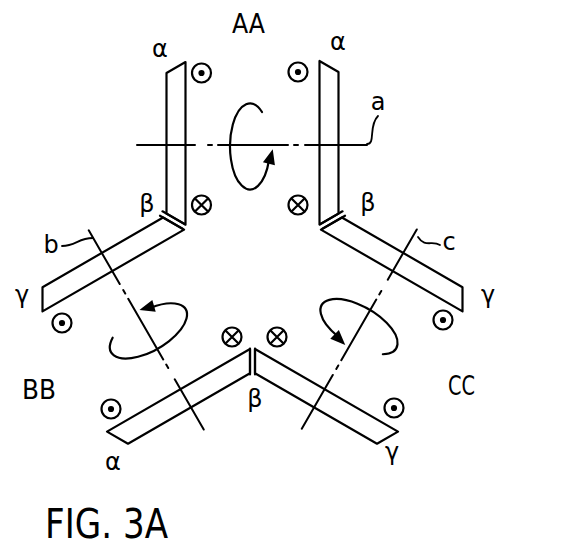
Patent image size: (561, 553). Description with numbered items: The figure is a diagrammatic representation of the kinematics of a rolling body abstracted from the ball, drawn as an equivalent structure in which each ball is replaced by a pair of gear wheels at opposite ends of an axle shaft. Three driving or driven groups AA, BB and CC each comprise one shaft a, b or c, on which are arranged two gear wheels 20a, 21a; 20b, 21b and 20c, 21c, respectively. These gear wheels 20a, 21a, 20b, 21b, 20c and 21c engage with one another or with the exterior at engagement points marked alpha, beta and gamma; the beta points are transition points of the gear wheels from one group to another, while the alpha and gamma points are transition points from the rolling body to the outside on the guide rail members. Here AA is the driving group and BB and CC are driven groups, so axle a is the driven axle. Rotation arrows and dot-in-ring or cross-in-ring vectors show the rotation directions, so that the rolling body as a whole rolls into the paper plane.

The gear wheel 20a is at (166, 109).
The gear wheel 20b is at (127, 238).
The gear wheel 20c is at (350, 430).
The gear wheel 21a is at (339, 97).
The gear wheel 21b is at (155, 430).
The gear wheel 21c is at (381, 238).